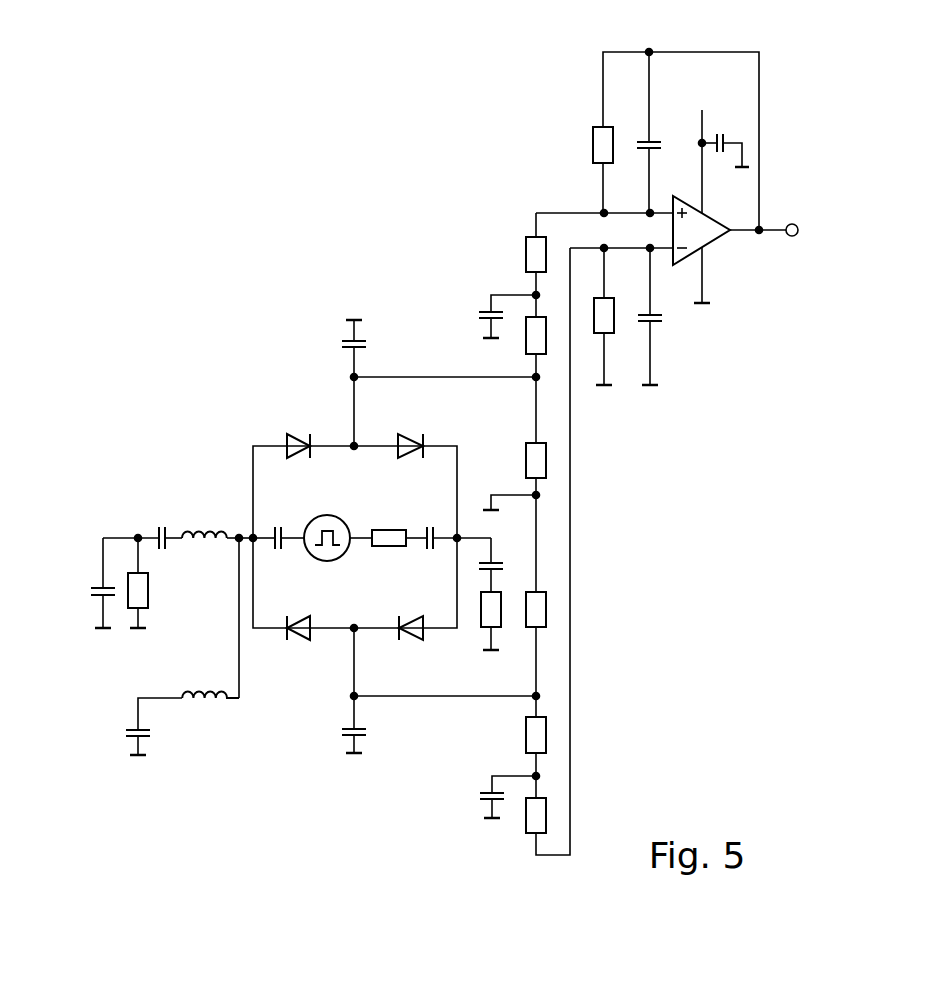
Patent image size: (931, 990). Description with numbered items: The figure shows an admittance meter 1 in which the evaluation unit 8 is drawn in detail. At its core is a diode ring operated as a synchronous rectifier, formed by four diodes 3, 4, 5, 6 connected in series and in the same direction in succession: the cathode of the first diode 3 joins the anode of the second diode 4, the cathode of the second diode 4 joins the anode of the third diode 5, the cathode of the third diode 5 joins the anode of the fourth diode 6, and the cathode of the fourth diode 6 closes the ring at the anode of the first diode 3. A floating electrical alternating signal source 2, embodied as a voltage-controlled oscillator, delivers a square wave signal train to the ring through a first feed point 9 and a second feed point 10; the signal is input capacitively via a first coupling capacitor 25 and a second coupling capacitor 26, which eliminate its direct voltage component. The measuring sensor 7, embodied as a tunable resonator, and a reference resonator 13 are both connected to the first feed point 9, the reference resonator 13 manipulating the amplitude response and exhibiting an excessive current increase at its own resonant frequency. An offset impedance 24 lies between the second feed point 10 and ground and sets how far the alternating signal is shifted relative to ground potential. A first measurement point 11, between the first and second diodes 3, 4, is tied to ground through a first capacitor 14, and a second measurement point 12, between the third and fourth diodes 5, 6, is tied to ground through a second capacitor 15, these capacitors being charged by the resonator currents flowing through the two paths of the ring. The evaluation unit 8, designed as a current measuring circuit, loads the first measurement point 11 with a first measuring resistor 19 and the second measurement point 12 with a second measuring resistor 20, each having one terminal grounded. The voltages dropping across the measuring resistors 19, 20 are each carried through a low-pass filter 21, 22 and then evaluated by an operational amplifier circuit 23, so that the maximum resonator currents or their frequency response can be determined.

The admittance meter 1 is at (218, 113).
The electrical alternating signal source 2 is at (304, 520).
The first diode 3 is at (300, 434).
The second diode 4 is at (415, 438).
The third diode 5 is at (413, 640).
The fourth diode 6 is at (300, 640).
The measuring sensor 7 is at (143, 482).
The evaluation unit 8 is at (748, 408).
The first feed point 9 is at (252, 535).
The second feed point 10 is at (461, 531).
The first measurement point 11 is at (345, 444).
The second measurement point 12 is at (343, 633).
The reference resonator 13 is at (118, 756).
The first capacitor 14 is at (348, 338).
The second capacitor 15 is at (347, 735).
The first measuring resistor 19 is at (546, 465).
The second measuring resistor 20 is at (546, 615).
The low-pass filter 21 is at (497, 243).
The low-pass filter 22 is at (492, 838).
The operational amplifier circuit 23 is at (538, 99).
The offset impedance 24 is at (467, 645).
The first coupling capacitor 25 is at (277, 527).
The second coupling capacitor 26 is at (424, 528).